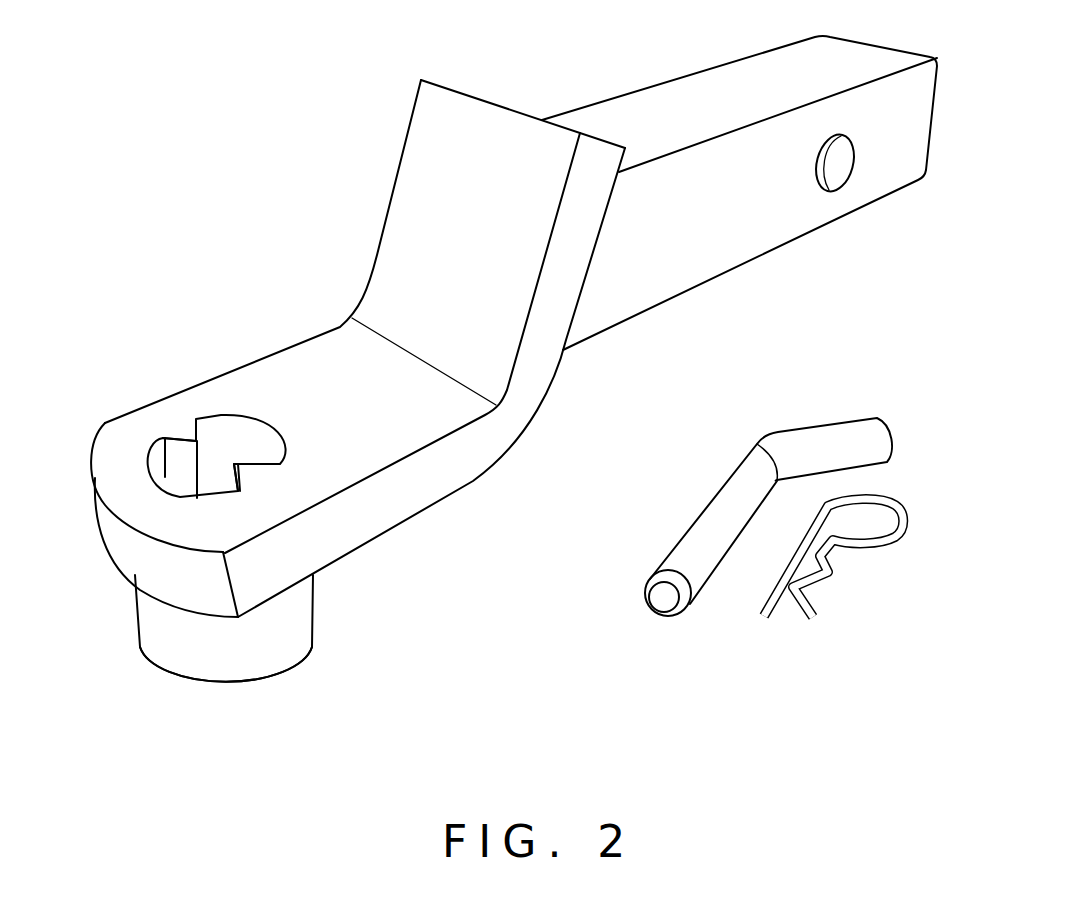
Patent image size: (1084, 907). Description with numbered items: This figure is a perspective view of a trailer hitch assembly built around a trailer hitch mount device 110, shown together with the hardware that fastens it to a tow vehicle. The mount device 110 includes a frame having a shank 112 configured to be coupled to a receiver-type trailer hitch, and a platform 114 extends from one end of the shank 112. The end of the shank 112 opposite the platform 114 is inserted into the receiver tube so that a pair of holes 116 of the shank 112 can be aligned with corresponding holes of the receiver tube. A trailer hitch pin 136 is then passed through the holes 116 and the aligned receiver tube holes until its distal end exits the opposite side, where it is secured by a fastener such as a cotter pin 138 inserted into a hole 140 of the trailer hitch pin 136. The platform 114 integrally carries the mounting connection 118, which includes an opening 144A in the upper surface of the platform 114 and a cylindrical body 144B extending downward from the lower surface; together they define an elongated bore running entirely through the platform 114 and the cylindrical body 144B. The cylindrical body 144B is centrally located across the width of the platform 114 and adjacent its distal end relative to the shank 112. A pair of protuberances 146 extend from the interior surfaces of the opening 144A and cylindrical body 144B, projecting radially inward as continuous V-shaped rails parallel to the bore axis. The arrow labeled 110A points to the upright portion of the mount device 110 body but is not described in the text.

The trailer hitch mount device 110 is at (168, 688).
The ball mount body 110A is at (400, 160).
The shank 112 is at (693, 83).
The platform 114 is at (345, 353).
The holes 116 is at (838, 180).
The mounting connection 118 is at (168, 413).
The trailer hitch pin 136 is at (715, 488).
The cotter pin 138 is at (872, 535).
The hole 140 is at (698, 587).
The opening 144A is at (232, 440).
The cylindrical body 144B is at (283, 635).
The protuberances 146 is at (182, 455).